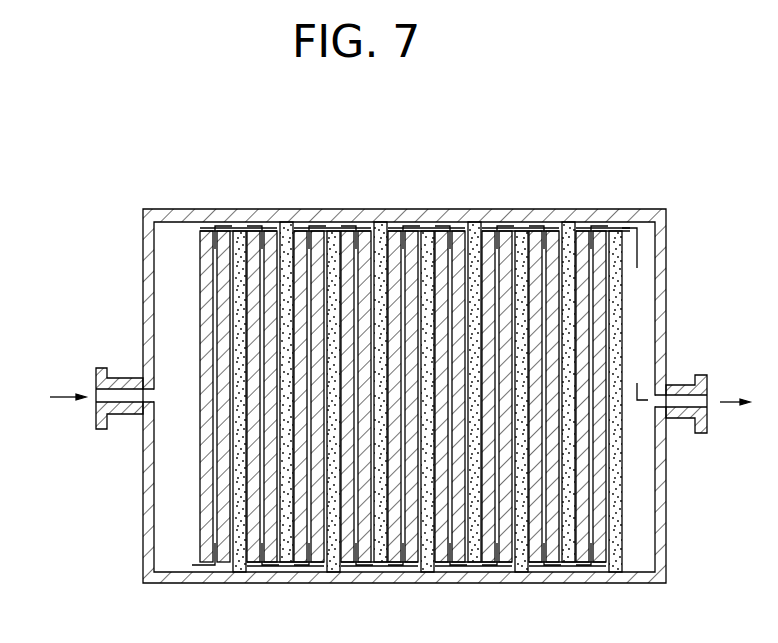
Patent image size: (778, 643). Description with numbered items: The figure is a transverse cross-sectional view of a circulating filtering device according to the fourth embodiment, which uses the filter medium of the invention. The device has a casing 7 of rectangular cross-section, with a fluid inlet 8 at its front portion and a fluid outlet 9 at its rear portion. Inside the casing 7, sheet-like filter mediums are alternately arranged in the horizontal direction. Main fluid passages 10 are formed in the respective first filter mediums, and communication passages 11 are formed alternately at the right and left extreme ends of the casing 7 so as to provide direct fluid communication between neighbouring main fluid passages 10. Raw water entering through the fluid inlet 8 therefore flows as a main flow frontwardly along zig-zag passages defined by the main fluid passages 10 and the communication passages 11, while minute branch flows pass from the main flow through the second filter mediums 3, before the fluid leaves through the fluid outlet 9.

The second filter mediums 3 is at (325, 564).
The casing 7 is at (620, 209).
The fluid inlet 8 is at (122, 403).
The fluid outlet 9 is at (684, 393).
The main fluid passages 10 is at (430, 571).
The communication passages 11 is at (240, 226).